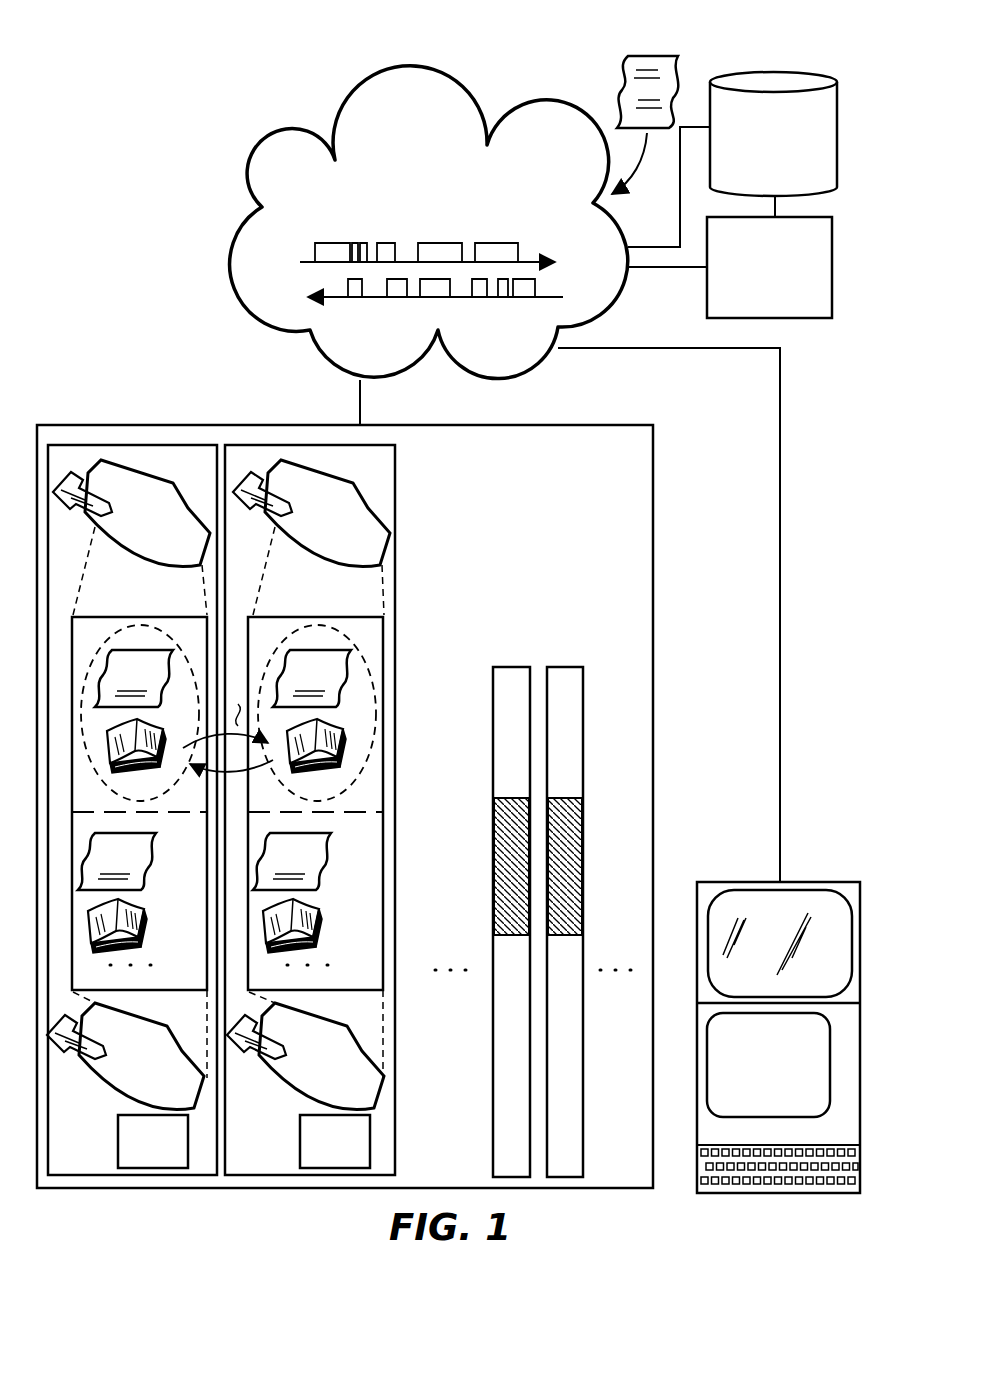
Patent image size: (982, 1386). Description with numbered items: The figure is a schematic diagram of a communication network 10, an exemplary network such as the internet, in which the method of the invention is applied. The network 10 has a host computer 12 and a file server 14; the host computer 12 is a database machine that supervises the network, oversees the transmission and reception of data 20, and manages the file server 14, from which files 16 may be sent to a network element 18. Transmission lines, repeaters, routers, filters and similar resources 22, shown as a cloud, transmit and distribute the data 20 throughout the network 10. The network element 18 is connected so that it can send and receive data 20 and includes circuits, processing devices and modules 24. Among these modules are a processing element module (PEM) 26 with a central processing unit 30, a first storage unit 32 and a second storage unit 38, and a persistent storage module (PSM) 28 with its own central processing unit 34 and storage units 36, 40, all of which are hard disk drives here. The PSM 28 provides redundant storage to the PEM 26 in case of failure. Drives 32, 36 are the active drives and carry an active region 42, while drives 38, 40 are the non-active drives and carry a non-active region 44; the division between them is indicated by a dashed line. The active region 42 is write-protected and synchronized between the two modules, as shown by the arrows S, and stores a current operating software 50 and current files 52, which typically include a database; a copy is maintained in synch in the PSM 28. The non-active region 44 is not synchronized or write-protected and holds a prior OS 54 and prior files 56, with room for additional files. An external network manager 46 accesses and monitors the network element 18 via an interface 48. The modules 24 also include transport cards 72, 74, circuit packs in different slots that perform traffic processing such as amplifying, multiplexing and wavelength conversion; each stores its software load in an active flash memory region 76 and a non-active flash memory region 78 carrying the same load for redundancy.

The communication network 10 is at (140, 82).
The host computer 12 is at (707, 300).
The file server 14 is at (722, 73).
The files 16 is at (618, 63).
The network element 18 is at (653, 648).
The data 20 is at (354, 219).
The network resources 22 is at (345, 100).
The modules 24 is at (583, 571).
The processing element module (PEM) 26 is at (110, 445).
The persistent storage module (PSM) 28 is at (250, 445).
The central processing unit 30 is at (118, 1138).
The first storage unit 32 is at (131, 537).
The central processing unit 34 is at (300, 1140).
The storage unit 36 is at (311, 537).
The second storage unit 38 is at (127, 1050).
The storage unit 40 is at (305, 1050).
The active region 42 is at (420, 707).
The non-active region 44 is at (418, 905).
The external network manager 46 is at (712, 882).
The interface 48 is at (780, 487).
The current operating software (OS) 50 is at (133, 638).
The current files 52 is at (146, 675).
The prior OS 54 is at (135, 861).
The prior files 56 is at (140, 926).
The transport card 72 is at (500, 667).
The transport card 74 is at (557, 667).
The active flash memory region 76 is at (547, 777).
The non-active flash memory region 78 is at (530, 877).